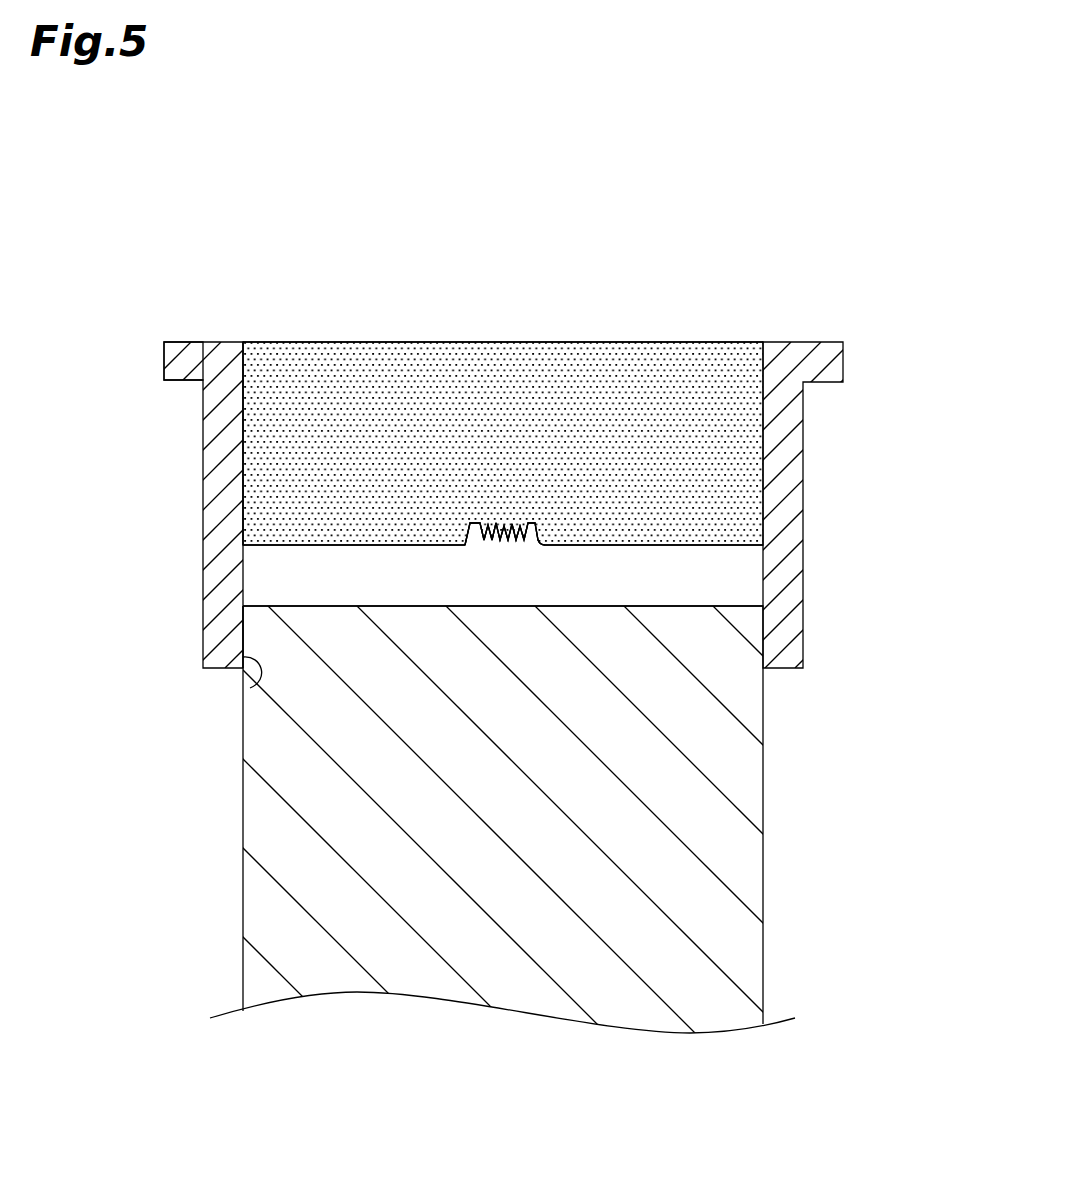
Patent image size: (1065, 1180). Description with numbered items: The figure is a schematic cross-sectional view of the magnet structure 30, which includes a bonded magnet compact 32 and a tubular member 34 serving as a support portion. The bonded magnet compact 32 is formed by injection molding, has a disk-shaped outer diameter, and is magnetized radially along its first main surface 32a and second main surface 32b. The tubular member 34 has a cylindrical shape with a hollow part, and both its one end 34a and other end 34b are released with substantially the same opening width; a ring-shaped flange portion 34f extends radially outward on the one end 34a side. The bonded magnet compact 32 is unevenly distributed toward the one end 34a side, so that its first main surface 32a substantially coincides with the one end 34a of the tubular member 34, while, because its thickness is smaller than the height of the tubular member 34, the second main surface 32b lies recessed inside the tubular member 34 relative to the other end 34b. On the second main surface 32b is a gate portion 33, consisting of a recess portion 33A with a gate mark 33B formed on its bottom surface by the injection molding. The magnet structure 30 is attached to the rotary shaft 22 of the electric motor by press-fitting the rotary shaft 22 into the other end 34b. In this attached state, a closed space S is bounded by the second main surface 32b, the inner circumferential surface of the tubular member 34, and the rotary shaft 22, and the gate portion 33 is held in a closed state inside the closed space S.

The magnet structure 30 is at (765, 215).
The bonded magnet compact 32 is at (615, 342).
The first main surface 32a is at (410, 342).
The second main surface 32b is at (290, 547).
The gate portion 33 is at (888, 550).
The recess portion 33A is at (535, 545).
The gate mark 33B is at (500, 542).
The tubular member 34 is at (218, 465).
The one end 34a is at (245, 353).
The other end 34b is at (245, 672).
The flange portion 34f is at (178, 360).
The rotary shaft 22 is at (745, 862).
The closed space S is at (425, 590).